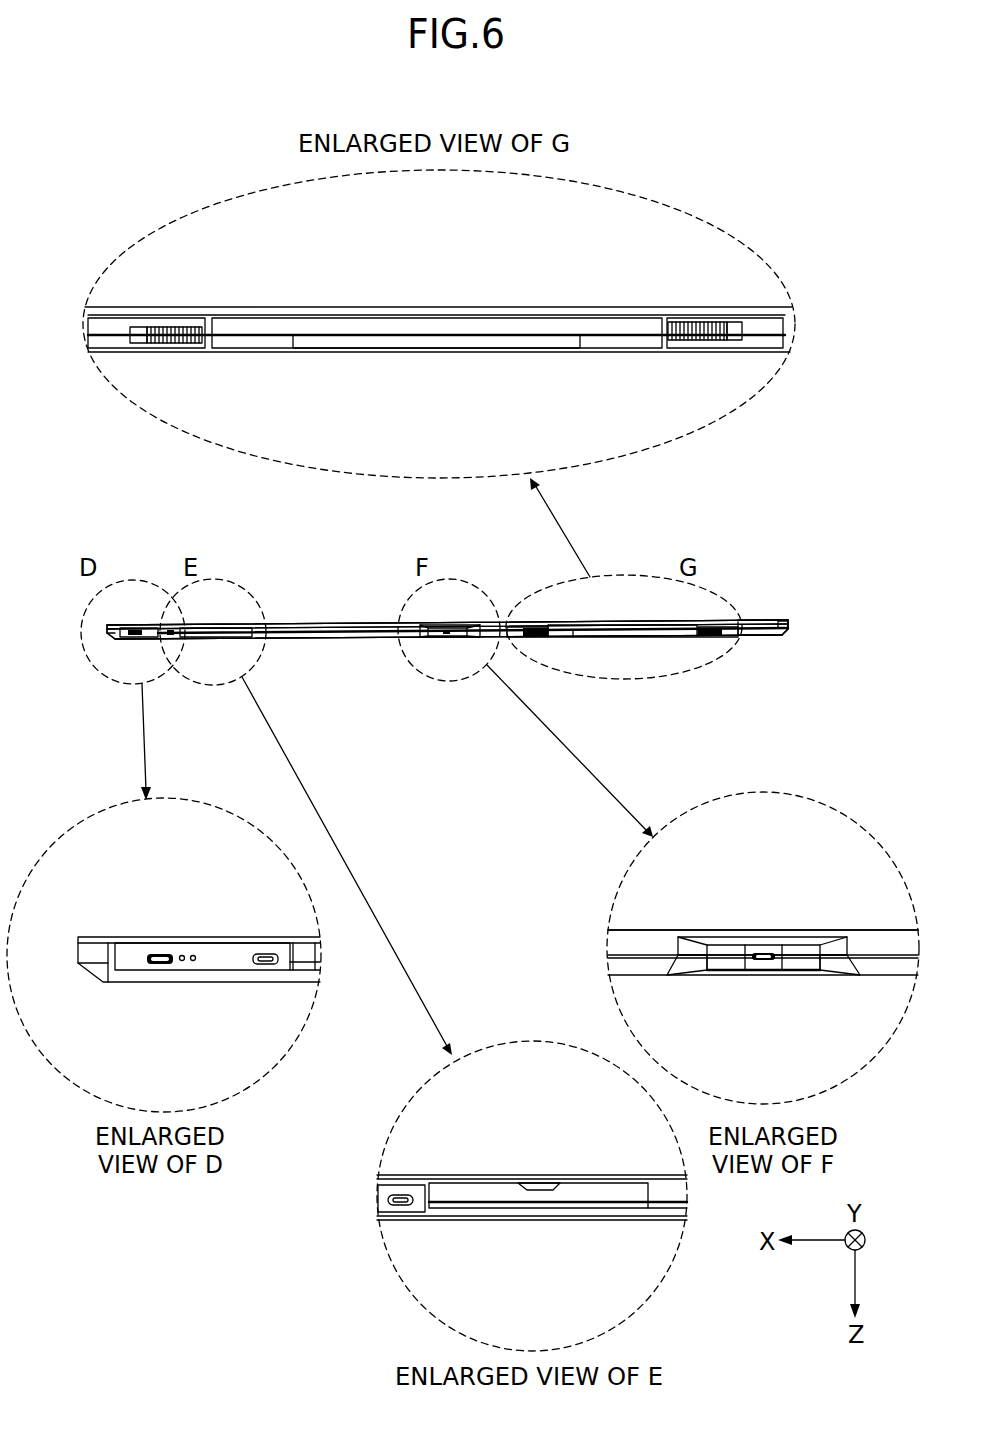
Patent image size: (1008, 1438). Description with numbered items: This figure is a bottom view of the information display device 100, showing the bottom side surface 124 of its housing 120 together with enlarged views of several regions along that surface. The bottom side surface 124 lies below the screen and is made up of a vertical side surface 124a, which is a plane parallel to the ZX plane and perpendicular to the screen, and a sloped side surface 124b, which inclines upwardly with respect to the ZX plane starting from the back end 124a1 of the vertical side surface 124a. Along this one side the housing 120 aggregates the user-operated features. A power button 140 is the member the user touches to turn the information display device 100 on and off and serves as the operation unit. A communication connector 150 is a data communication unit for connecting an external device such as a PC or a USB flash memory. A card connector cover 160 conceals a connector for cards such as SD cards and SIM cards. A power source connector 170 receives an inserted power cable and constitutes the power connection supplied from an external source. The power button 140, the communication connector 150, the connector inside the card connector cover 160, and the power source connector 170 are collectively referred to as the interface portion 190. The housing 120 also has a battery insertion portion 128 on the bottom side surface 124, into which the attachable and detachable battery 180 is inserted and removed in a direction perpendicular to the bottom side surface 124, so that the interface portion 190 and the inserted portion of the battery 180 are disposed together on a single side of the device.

The information display device 100 is at (100, 104).
The housing 120 is at (762, 622).
The bottom side surface 124 is at (288, 626).
The vertical side surface 124a is at (359, 626).
The back end 124a1 is at (884, 952).
The sloped side surface 124b is at (358, 639).
The battery insertion portion 128 is at (263, 353).
The power button 140 is at (160, 964).
The communication connector 150 is at (267, 952).
The card connector cover 160 is at (540, 1186).
The power source connector 170 is at (767, 945).
The battery 180 is at (433, 325).
The interface portion 190 is at (766, 657).